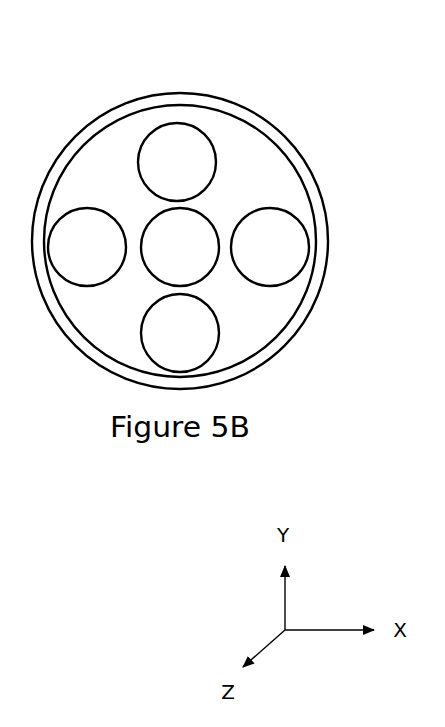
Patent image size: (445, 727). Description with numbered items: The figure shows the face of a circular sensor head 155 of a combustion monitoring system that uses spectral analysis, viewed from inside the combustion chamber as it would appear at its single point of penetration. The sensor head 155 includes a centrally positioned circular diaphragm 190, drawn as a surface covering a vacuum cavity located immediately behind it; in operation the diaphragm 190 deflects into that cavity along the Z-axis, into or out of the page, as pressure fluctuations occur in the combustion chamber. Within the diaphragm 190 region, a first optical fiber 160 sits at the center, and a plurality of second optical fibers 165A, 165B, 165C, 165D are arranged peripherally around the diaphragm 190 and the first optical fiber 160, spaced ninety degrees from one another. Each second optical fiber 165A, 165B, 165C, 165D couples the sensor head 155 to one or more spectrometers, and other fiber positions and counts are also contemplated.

The sensor head 155 is at (112, 103).
The diaphragm 190 is at (241, 116).
The first optical fiber 160 is at (180, 247).
The second optical fiber 165A is at (177, 162).
The second optical fiber 165B is at (87, 247).
The second optical fiber 165C is at (180, 333).
The second optical fiber 165D is at (270, 247).